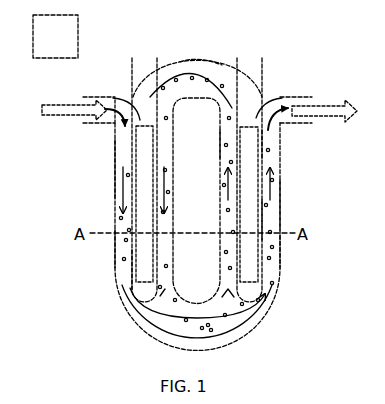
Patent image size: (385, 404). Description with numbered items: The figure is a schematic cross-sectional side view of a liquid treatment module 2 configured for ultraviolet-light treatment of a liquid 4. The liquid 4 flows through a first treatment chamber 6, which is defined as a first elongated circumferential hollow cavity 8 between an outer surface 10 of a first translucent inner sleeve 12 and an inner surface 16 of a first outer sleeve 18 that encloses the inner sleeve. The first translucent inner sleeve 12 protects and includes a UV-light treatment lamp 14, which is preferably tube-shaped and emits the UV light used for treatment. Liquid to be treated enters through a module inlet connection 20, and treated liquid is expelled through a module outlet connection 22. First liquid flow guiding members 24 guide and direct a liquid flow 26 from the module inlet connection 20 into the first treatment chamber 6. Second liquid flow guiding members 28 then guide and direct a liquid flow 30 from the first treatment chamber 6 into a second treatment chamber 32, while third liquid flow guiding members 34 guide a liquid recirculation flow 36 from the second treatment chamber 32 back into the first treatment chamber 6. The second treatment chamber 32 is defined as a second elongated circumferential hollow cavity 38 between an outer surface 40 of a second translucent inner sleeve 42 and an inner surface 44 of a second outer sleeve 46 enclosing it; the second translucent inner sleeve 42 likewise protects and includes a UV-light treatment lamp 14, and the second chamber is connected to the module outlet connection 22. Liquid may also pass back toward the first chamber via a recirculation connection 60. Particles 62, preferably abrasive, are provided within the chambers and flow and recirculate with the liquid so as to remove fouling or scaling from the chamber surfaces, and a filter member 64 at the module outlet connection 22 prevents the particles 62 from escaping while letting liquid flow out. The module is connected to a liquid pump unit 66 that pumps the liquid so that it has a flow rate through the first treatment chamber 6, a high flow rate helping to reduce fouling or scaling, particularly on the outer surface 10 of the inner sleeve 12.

The liquid treatment module 2 is at (98, 180).
The liquid 4 is at (63, 106).
The first treatment chamber 6 is at (125, 258).
The first elongated circumferential hollow cavity 8 is at (194, 177).
The outer surface of first translucent inner sleeve 10 is at (131, 227).
The first translucent inner sleeve 12 is at (132, 272).
The UV-light treatment lamp 14 is at (199, 204).
The inner surface of first outer sleeve 16 is at (113, 250).
The first outer sleeve 18 is at (113, 160).
The module inlet connection 20 is at (100, 96).
The module outlet connection 22 is at (297, 96).
The first liquid flow guiding member 24 is at (124, 97).
The liquid flow from inlet 26 is at (110, 116).
The second liquid flow guiding member 28 is at (170, 297).
The liquid flow between chambers 30 is at (185, 337).
The second treatment chamber 32 is at (273, 247).
The third liquid flow guiding member 34 is at (210, 104).
The liquid recirculation flow 36 is at (198, 73).
The second elongated circumferential hollow cavity 38 is at (228, 143).
The outer surface of second translucent inner sleeve 40 is at (237, 238).
The second translucent inner sleeve 42 is at (263, 223).
The inner surface of second outer sleeve 44 is at (282, 205).
The second outer sleeve 46 is at (282, 247).
The recirculation connection 60 is at (222, 72).
The particles 62 is at (270, 258).
The filter member 64 is at (117, 116).
The liquid pump unit 66 is at (55, 36).